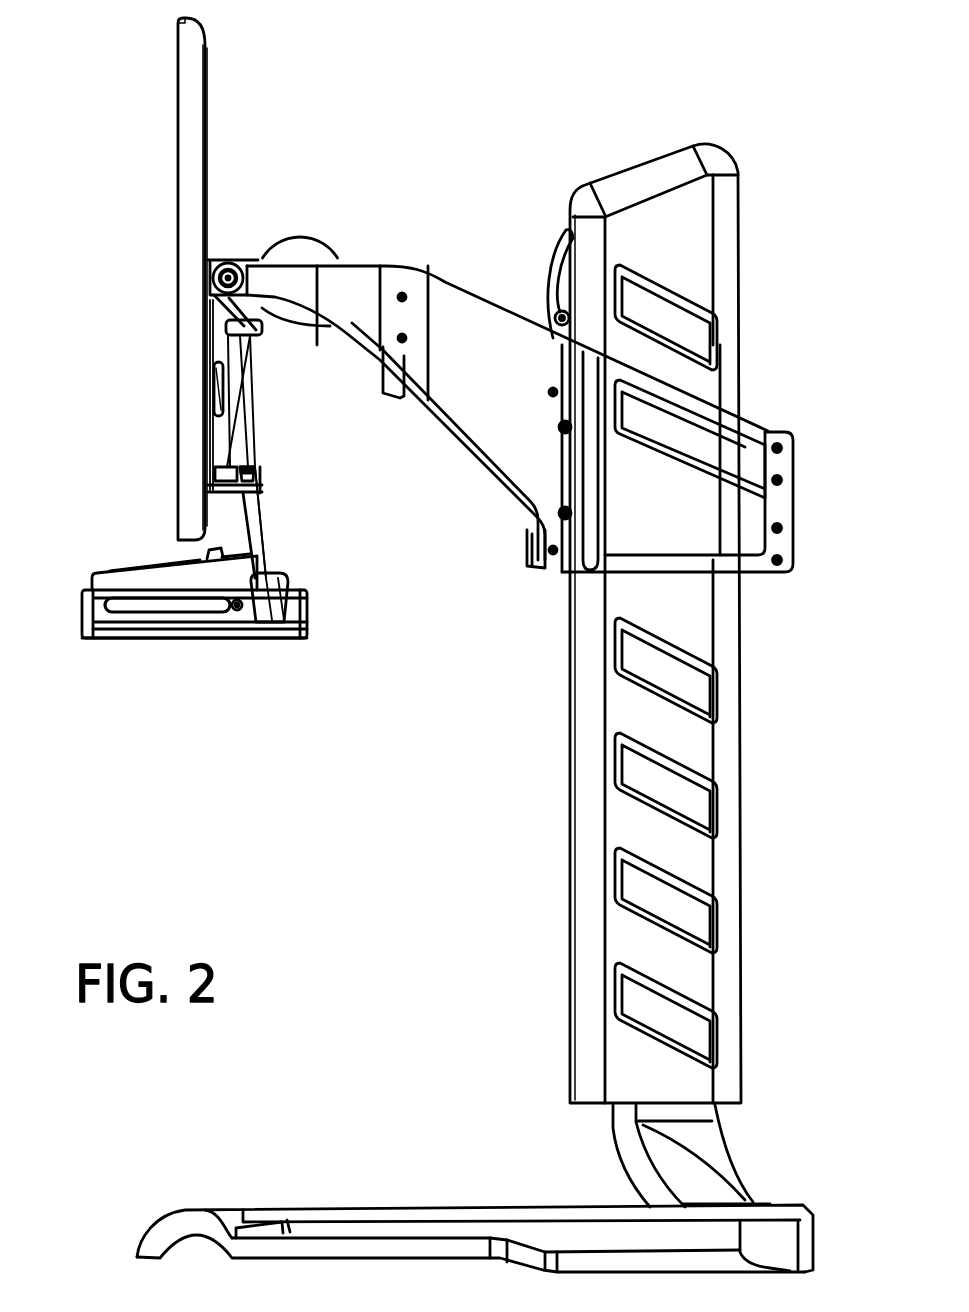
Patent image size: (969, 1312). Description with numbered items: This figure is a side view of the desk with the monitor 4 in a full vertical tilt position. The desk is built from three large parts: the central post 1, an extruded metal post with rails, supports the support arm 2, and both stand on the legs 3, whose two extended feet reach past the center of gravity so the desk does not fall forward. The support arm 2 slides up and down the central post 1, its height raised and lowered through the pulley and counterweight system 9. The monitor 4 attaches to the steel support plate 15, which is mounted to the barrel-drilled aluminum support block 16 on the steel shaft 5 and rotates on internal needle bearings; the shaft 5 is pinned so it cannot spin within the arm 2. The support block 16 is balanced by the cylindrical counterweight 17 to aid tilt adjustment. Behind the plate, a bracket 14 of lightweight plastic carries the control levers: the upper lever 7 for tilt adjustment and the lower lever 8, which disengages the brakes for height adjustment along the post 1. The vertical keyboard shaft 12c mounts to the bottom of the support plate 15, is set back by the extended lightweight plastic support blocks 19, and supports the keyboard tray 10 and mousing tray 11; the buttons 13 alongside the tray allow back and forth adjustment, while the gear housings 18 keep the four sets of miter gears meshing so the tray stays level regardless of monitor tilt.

The central post 1 is at (722, 212).
The support arm 2 is at (737, 528).
The legs 3 is at (713, 1148).
The monitor 4 is at (192, 58).
The steel shaft 5 is at (231, 273).
The upper lever 7 is at (215, 368).
The lower lever 8 is at (226, 458).
The pulley and counterweight system 9 is at (560, 262).
The keyboard tray 10 is at (82, 615).
The mousing tray 11 is at (302, 639).
The vertical keyboard shaft 12c is at (262, 520).
The buttons 13 is at (237, 608).
The bracket 14 is at (238, 333).
The support plate 15 is at (205, 143).
The support block 16 is at (218, 258).
The cylindrical counterweight 17 is at (295, 257).
The gear housings 18 is at (290, 582).
The lightweight plastic support blocks 19 is at (257, 478).